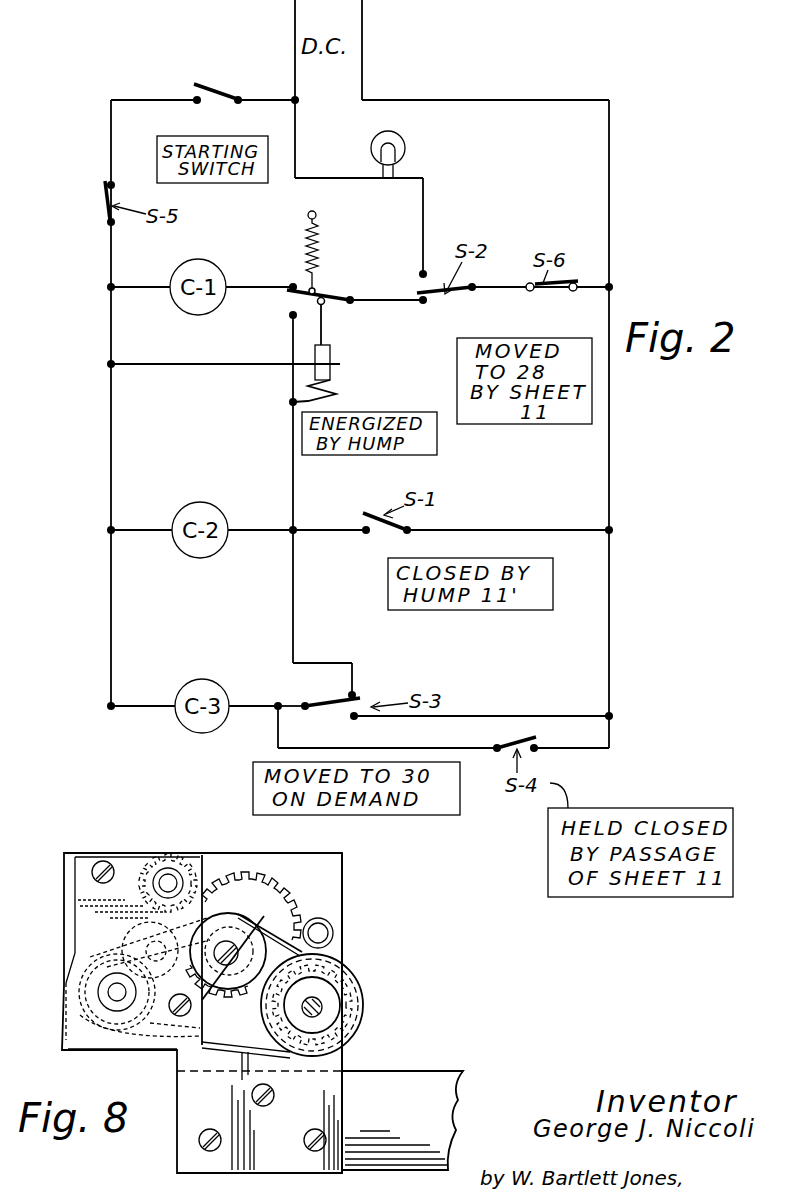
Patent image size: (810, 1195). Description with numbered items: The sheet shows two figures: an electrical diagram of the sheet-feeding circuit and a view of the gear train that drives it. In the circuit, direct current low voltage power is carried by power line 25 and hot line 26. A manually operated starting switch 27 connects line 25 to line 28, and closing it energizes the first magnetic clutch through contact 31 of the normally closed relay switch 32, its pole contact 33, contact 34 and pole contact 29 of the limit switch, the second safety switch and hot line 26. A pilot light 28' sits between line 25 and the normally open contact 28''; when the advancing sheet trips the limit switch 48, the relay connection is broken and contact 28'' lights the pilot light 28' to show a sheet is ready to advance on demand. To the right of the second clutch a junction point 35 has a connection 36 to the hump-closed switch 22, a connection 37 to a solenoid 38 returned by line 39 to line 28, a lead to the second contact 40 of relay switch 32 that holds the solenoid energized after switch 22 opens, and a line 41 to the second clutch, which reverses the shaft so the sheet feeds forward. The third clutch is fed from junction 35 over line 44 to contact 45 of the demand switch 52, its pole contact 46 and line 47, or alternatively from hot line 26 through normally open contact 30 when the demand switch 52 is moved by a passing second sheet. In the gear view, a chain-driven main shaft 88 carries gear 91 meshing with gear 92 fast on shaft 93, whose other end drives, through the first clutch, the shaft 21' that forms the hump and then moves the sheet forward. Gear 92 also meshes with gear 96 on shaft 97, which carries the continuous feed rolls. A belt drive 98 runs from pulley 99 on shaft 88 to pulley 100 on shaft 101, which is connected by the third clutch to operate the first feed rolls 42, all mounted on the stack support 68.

In FIG. 2, the power line 25 is at (294, 29).
In FIG. 2, the hot line 26 is at (363, 30).
In FIG. 2, the starting switch 27 is at (216, 96).
In FIG. 2, the line 28 is at (128, 403).
In FIG. 2, the pilot light 28' is at (373, 202).
In FIG. 2, the normally open contact 28'' is at (405, 261).
In FIG. 2, the pole contact 29 is at (475, 285).
In FIG. 2, the normally open contact 30 is at (358, 718).
In FIG. 2, the contact 31 is at (292, 284).
In FIG. 2, the relay switch 32 is at (325, 307).
In FIG. 2, the pole contact 33 is at (351, 298).
In FIG. 2, the contact 34 is at (423, 304).
In FIG. 2, the junction point 35 is at (297, 534).
In FIG. 2, the connection 36 is at (328, 529).
In FIG. 2, the connection 37 is at (292, 473).
In FIG. 2, the solenoid 38 is at (340, 385).
In FIG. 2, the line 39 is at (243, 366).
In FIG. 2, the second contact 40 is at (289, 316).
In FIG. 2, the line 41 is at (270, 534).
In FIG. 2, the line 44 is at (294, 627).
In FIG. 2, the contact 45 is at (356, 693).
In FIG. 2, the pole contact 46 is at (305, 704).
In FIG. 2, the line 47 is at (254, 710).
In FIG. 2, the limit switch 48 is at (500, 338).
In FIG. 2, the demand switch 52 is at (328, 710).
In FIG. 2, the switch 22 is at (455, 558).
In FIG. 8, the shaft 21' is at (347, 928).
In FIG. 8, the feed rolls 42 is at (128, 935).
In FIG. 8, the tray 68 is at (418, 1076).
In FIG. 8, the main shaft 88 is at (318, 1013).
In FIG. 8, the gear 91 is at (350, 968).
In FIG. 8, the gear 92 is at (275, 887).
In FIG. 8, the shaft 93 is at (232, 928).
In FIG. 8, the gear 96 is at (147, 860).
In FIG. 8, the shaft 97 is at (170, 880).
In FIG. 8, the belt drive 98 is at (221, 1042).
In FIG. 8, the pulley 99 is at (373, 1020).
In FIG. 8, the pulley 100 is at (82, 952).
In FIG. 8, the shaft 101 is at (115, 992).